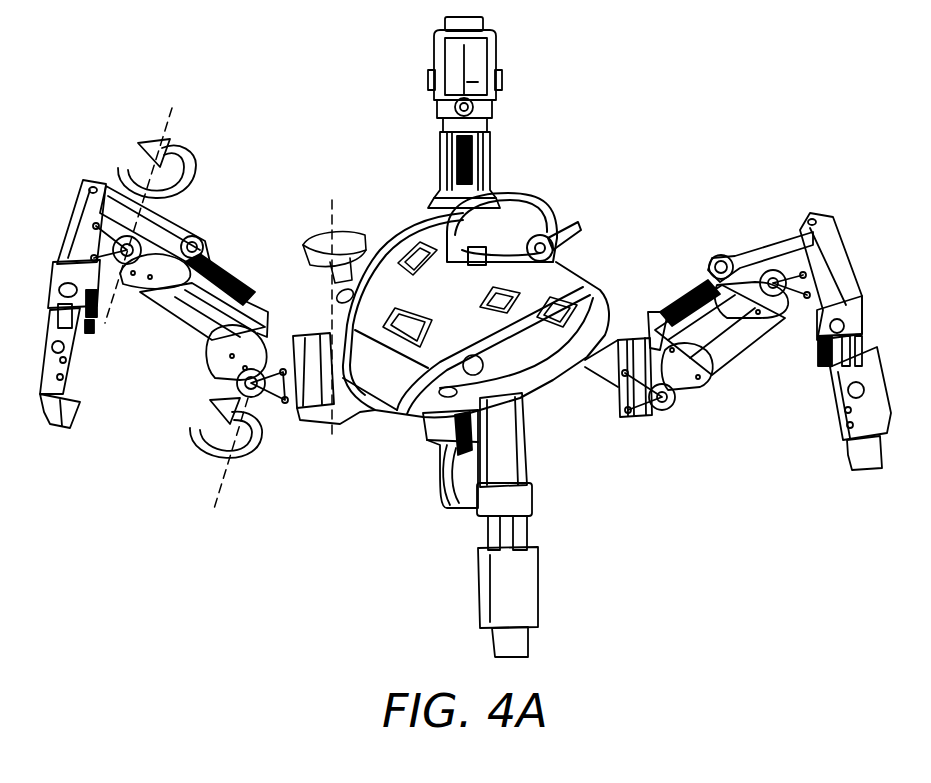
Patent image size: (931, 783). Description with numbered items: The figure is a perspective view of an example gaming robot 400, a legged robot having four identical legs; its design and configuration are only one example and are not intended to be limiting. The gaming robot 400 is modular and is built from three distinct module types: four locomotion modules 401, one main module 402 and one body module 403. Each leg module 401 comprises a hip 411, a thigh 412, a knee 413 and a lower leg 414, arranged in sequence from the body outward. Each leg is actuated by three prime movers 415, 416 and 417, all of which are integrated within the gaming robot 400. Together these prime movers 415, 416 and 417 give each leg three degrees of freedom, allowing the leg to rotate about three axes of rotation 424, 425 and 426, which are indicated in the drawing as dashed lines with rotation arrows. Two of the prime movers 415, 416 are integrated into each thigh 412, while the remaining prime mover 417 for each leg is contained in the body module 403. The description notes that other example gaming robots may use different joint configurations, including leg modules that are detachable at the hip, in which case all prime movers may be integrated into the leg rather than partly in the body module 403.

The gaming robot 400 is at (682, 108).
The locomotion module 401 is at (466, 536).
The main module 402 is at (398, 228).
The body module 403 is at (354, 396).
The hip 411 is at (226, 381).
The thigh 412 is at (195, 310).
The knee 413 is at (150, 220).
The lower leg 414 is at (76, 376).
The prime mover 415 is at (757, 248).
The prime mover 416 is at (683, 370).
The prime mover 417 is at (582, 410).
The axis of rotation 424 is at (175, 112).
The axis of rotation 425 is at (238, 505).
The axis of rotation 426 is at (330, 438).